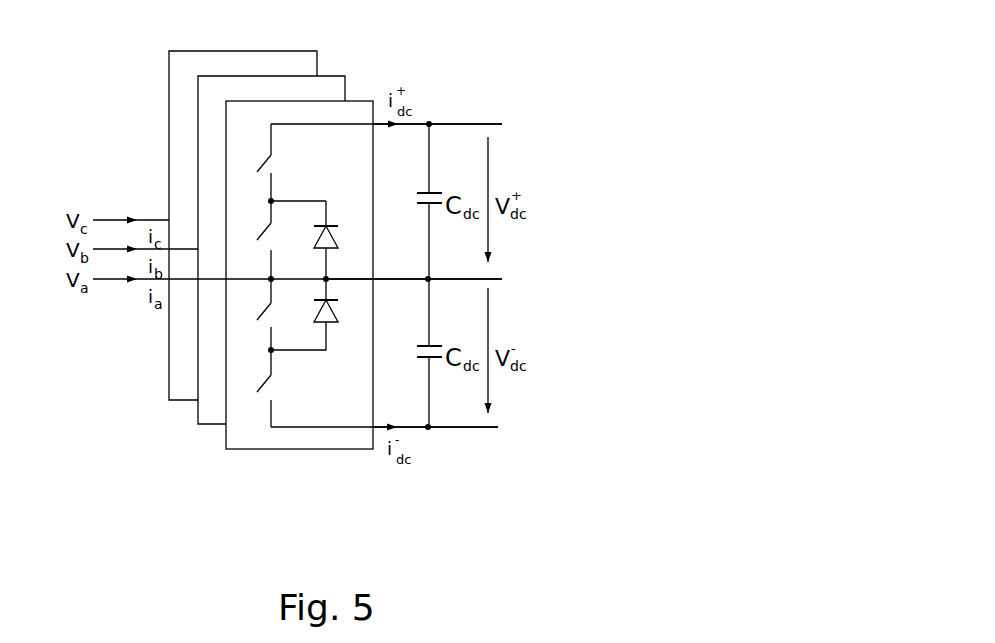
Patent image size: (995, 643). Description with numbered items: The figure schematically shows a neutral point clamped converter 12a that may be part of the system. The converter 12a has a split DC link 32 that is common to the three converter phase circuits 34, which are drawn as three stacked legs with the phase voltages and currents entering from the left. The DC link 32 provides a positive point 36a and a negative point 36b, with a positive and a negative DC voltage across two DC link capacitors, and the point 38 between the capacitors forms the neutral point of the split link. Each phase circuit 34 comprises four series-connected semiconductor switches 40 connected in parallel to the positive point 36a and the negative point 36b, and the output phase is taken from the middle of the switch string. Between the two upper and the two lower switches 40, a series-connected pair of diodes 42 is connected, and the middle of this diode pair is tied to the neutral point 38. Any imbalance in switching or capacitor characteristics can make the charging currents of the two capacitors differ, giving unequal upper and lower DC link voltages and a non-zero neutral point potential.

The neutral point clamped converter 12a is at (573, 67).
The DC link 32 is at (440, 73).
The converter phase circuit 34 is at (183, 403).
The positive point 36a is at (429, 124).
The negative point 36b is at (427, 430).
The neutral point 38 is at (428, 275).
The semiconductor switch 40 is at (184, 259).
The diode 42 is at (370, 281).